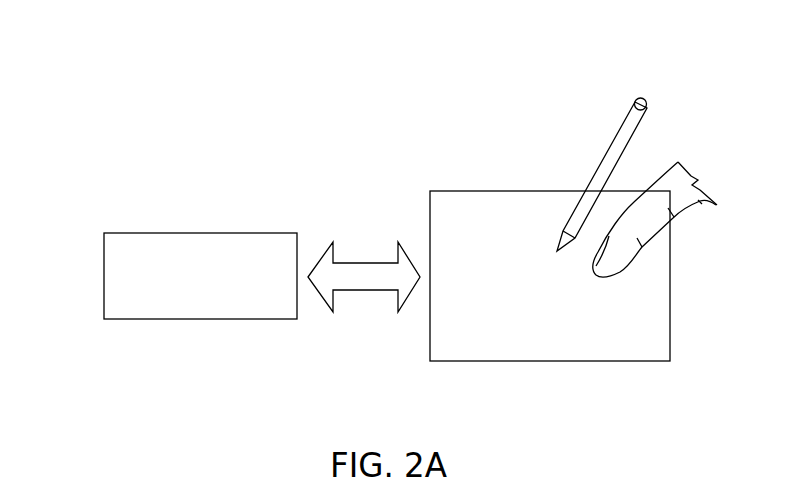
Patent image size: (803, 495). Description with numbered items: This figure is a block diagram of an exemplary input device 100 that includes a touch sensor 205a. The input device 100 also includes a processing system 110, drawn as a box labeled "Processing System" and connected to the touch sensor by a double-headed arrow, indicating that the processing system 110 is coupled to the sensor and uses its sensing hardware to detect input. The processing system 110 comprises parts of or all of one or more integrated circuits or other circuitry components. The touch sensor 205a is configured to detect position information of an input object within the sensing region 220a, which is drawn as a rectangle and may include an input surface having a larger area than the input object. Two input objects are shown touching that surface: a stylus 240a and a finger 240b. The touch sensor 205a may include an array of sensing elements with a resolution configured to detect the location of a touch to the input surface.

The input device 100 is at (245, 100).
The processing system 110 is at (104, 268).
The sensing region 220a is at (671, 272).
The touch sensor 205a is at (680, 377).
The stylus 240a is at (641, 98).
The finger 240b is at (697, 183).